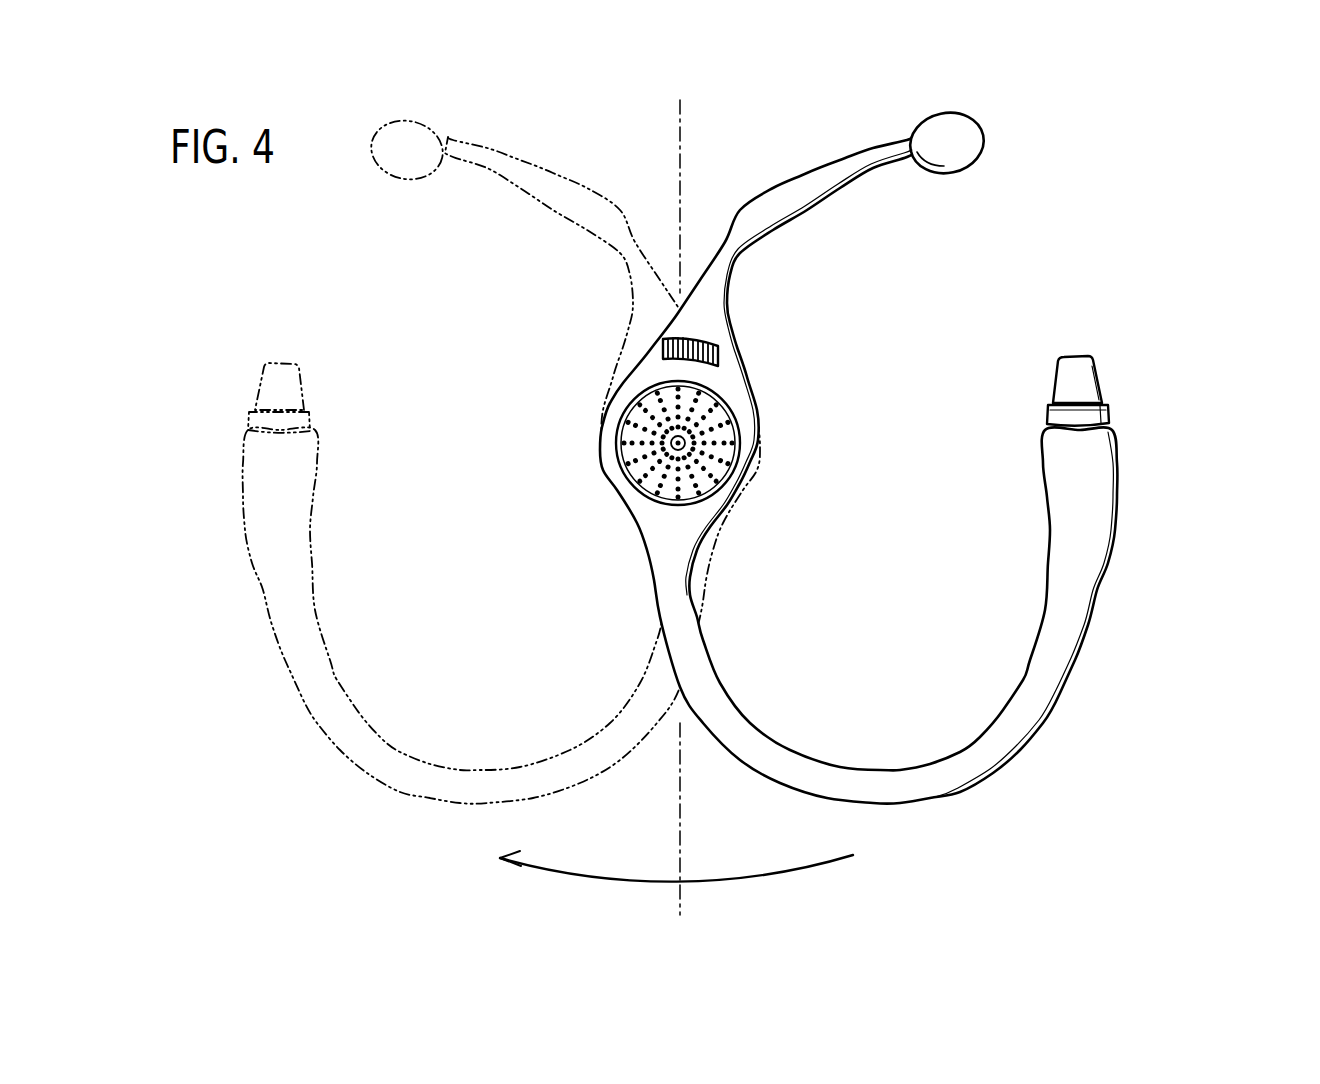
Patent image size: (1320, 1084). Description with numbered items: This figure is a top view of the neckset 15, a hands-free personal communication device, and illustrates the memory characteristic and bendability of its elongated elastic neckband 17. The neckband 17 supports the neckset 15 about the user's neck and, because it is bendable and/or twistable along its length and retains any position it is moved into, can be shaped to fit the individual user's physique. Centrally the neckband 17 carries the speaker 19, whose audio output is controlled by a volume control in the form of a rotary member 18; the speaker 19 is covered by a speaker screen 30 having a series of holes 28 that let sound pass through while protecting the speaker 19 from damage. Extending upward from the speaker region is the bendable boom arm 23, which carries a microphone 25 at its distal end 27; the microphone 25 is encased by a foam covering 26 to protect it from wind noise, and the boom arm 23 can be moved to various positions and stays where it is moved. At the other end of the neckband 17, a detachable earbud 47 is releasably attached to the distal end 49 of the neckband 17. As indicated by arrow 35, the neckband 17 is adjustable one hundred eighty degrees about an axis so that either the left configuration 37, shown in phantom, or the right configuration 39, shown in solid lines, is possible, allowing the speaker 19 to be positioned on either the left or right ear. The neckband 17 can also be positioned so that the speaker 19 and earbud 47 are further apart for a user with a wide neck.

The neckset 15 is at (1012, 792).
The elongated elastic neckband 17 is at (1067, 653).
The rotary member 18 is at (718, 348).
The speaker 19 is at (718, 422).
The bendable boom arm 23 is at (805, 177).
The microphone 25 is at (977, 135).
The foam covering 26 is at (963, 148).
The distal end 27 is at (909, 196).
The holes 28 is at (642, 404).
The speaker screen 30 is at (725, 453).
The arrow 35 is at (740, 885).
The left configuration 37 is at (427, 501).
The right configuration 39 is at (935, 500).
The earbud 47 is at (1095, 378).
The distal end 49 is at (1141, 458).